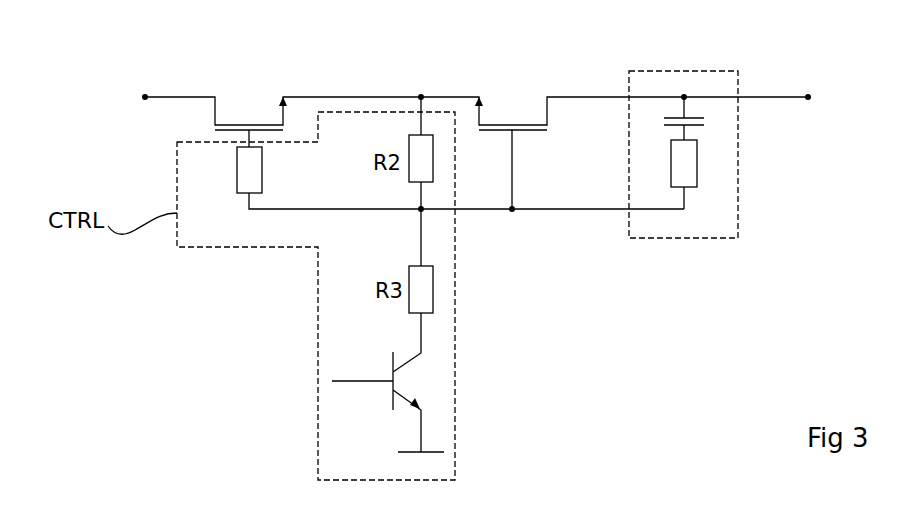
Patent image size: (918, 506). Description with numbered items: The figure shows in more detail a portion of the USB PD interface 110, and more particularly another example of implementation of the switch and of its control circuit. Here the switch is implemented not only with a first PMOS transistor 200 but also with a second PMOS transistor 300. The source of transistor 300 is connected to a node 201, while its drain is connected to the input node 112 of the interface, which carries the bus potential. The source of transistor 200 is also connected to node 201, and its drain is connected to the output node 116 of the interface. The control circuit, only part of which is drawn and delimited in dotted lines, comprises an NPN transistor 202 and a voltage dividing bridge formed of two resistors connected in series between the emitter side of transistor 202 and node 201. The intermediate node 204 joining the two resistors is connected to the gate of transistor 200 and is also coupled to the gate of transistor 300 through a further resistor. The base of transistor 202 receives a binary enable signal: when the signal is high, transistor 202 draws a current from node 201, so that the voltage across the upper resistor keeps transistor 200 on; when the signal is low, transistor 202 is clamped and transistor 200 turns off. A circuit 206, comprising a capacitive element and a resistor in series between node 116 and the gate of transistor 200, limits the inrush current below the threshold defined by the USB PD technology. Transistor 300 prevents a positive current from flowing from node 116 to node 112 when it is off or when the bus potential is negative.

The interface 110 is at (104, 66).
The node 112 is at (145, 96).
The node 116 is at (808, 96).
The PMOS transistor 200 is at (510, 104).
The node 201 is at (421, 96).
The NPN transistor 202 is at (420, 382).
The intermediate node 204 is at (421, 209).
The circuit 206 is at (738, 204).
The PMOS transistor 300 is at (254, 98).